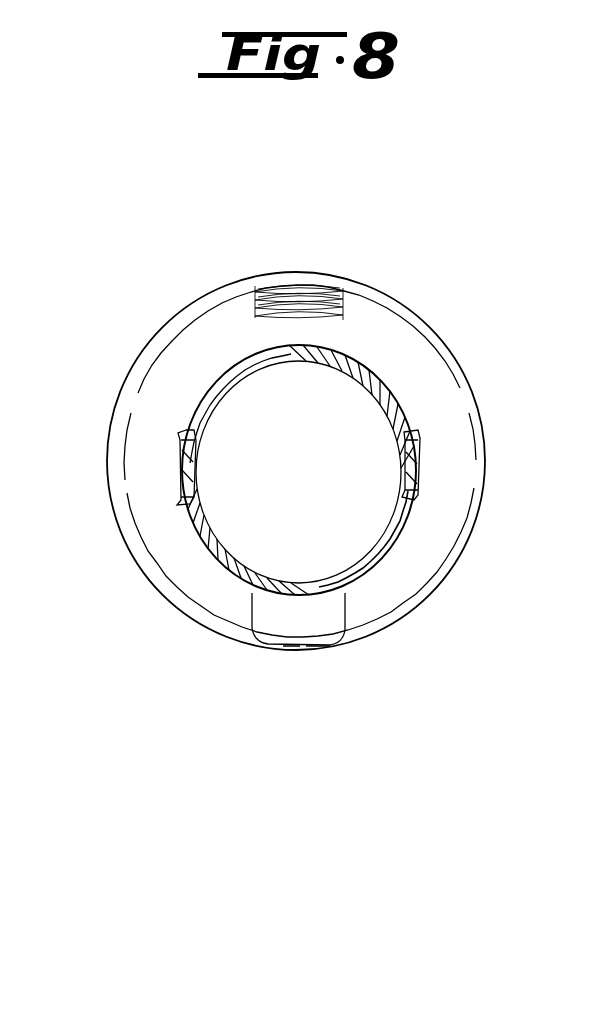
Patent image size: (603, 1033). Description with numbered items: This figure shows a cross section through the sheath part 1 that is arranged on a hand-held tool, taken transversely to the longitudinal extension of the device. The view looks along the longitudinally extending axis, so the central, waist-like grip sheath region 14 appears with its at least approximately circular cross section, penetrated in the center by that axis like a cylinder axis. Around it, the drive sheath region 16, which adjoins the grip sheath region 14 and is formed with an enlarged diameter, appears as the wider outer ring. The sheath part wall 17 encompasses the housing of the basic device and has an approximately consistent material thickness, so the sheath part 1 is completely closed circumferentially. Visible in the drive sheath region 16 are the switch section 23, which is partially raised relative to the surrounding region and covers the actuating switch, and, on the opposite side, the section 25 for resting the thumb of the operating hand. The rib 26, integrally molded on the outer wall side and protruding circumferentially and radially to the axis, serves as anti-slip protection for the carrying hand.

The sheath part 1 is at (135, 240).
The grip sheath region 14 is at (385, 548).
The drive sheath region 16 is at (437, 410).
The sheath part wall 17 is at (362, 573).
The switch section 23 is at (282, 615).
The section for resting the thumb 25 is at (292, 295).
The rib 26 is at (432, 333).